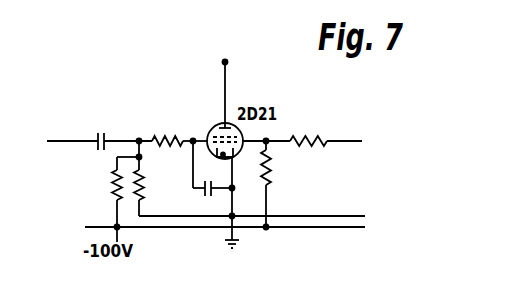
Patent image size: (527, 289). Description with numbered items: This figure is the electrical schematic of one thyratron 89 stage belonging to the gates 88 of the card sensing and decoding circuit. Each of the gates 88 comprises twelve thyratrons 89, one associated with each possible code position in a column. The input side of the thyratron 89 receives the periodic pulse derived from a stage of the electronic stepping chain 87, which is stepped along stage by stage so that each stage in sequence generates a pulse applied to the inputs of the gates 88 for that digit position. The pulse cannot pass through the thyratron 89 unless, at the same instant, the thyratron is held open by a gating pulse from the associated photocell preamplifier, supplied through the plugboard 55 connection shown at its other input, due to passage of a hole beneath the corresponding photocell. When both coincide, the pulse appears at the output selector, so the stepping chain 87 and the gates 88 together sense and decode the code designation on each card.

The thyratron 89 is at (216, 127).
The electronic stepping chain 87 is at (80, 117).
The gates 88 is at (320, 75).
The plugboard 55 input 55 is at (381, 124).